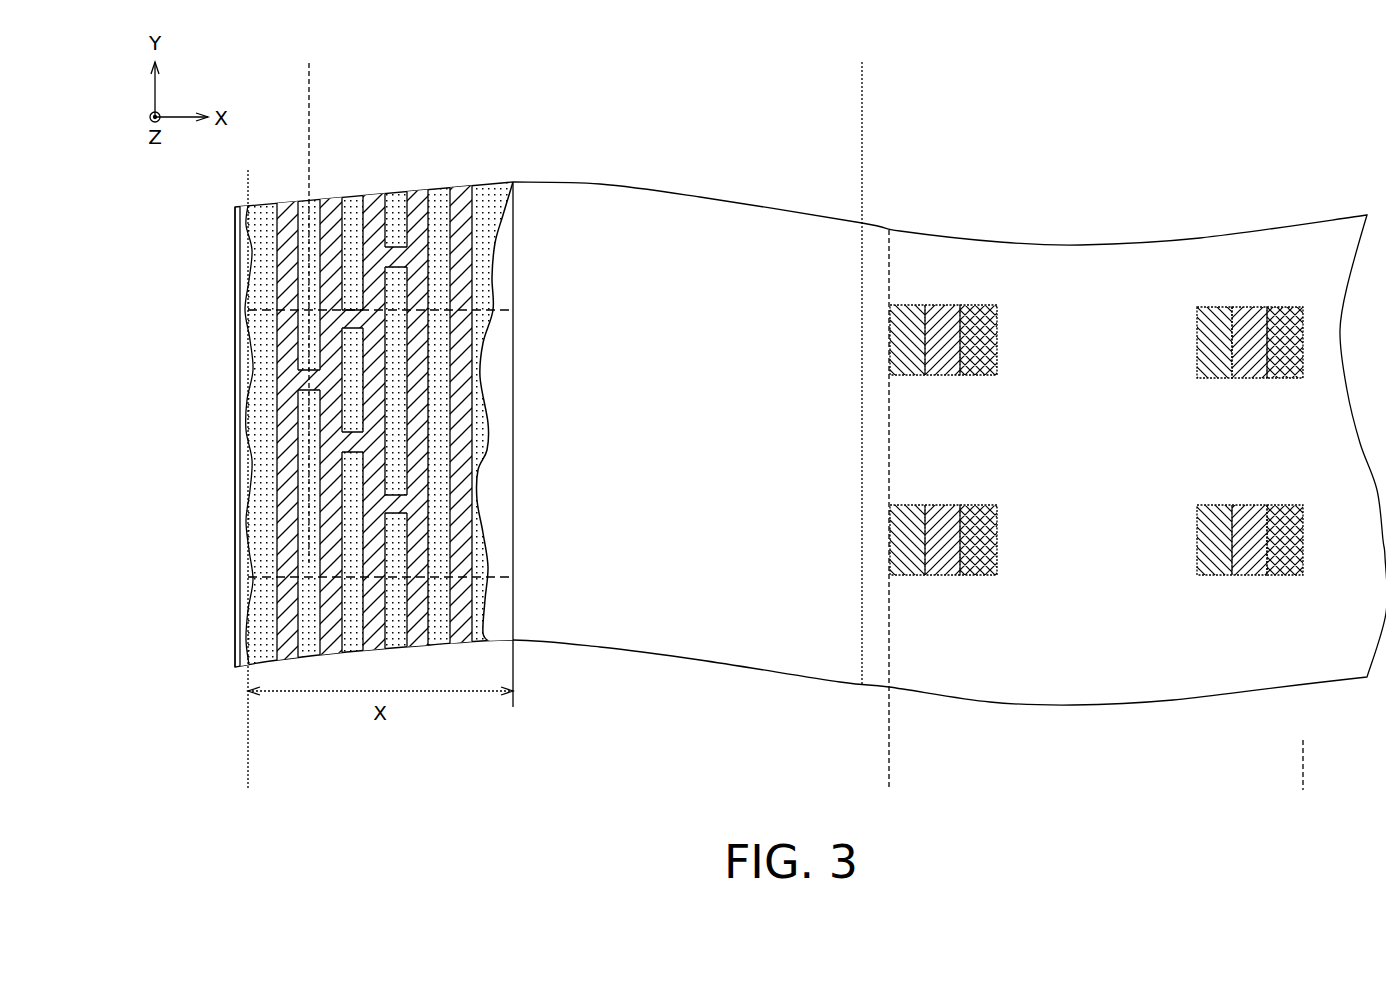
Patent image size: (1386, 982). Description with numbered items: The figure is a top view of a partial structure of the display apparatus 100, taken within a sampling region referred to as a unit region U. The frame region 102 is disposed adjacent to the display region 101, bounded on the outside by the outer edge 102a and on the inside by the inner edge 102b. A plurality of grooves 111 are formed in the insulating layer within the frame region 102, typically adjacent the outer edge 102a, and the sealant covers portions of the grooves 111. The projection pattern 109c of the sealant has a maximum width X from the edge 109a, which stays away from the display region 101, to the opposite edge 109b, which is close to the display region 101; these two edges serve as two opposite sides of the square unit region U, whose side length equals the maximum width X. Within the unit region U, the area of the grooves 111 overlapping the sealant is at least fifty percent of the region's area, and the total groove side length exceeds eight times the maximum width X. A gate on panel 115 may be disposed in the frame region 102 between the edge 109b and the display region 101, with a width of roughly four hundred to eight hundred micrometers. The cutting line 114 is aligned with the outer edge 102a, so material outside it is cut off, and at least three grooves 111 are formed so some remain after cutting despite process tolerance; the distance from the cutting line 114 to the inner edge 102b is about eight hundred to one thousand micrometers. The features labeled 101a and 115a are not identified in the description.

The display apparatus 100 is at (248, 192).
The cutting line 114 is at (234, 194).
The frame region 102 is at (889, 766).
The display region 101 is at (889, 766).
The terminal pads 101a is at (935, 297).
The outer edge of the frame region 102a is at (248, 577).
The inner edge of the frame region 102b is at (889, 620).
The edge of the sealant 109a is at (248, 309).
The edge of the sealant 109b is at (488, 427).
The projection pattern 109c is at (442, 177).
The grooves 111 is at (503, 255).
The gate on panel 115 is at (309, 75).
The edge of peripheral region 115a is at (307, 173).
The unit region U is at (488, 338).